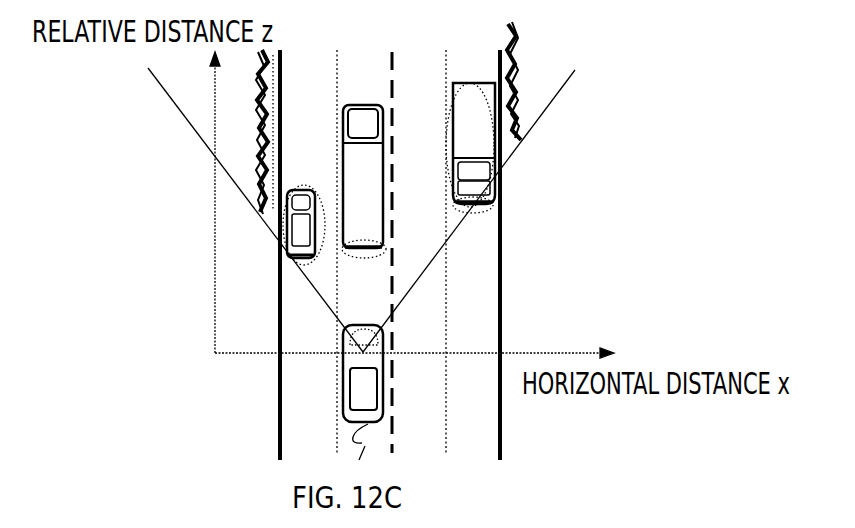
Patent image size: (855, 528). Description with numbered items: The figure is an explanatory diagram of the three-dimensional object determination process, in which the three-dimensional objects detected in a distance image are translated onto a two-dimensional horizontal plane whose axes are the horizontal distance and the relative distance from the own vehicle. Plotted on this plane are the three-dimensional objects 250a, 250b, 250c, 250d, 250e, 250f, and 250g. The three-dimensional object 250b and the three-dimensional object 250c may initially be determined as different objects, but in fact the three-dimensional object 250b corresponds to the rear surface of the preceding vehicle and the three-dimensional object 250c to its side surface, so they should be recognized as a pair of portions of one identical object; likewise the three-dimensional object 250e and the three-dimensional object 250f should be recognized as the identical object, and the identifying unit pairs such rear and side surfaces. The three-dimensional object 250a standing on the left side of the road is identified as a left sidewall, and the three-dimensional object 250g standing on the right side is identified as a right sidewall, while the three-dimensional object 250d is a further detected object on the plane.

The three-dimensional object 250a is at (257, 148).
The three-dimensional object 250b is at (306, 262).
The three-dimensional object 250c is at (318, 192).
The three-dimensional object 250d is at (375, 258).
The three-dimensional object 250e is at (447, 82).
The three-dimensional object 250f is at (472, 207).
The three-dimensional object 250g is at (527, 118).